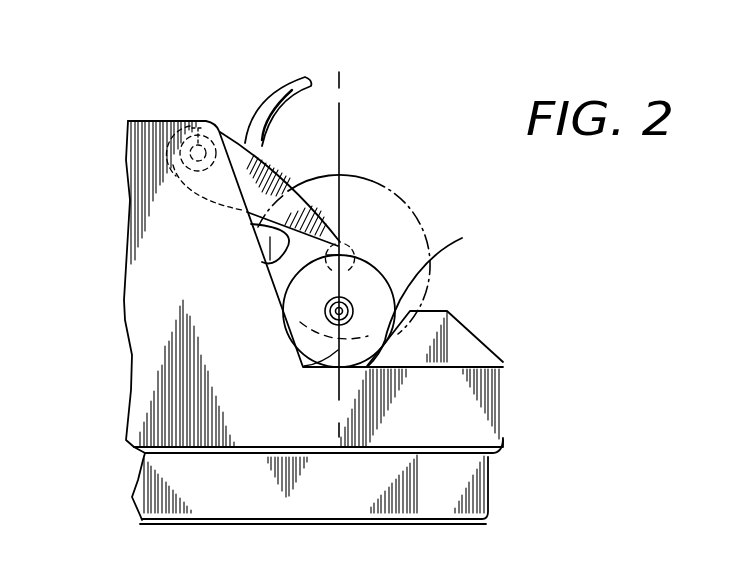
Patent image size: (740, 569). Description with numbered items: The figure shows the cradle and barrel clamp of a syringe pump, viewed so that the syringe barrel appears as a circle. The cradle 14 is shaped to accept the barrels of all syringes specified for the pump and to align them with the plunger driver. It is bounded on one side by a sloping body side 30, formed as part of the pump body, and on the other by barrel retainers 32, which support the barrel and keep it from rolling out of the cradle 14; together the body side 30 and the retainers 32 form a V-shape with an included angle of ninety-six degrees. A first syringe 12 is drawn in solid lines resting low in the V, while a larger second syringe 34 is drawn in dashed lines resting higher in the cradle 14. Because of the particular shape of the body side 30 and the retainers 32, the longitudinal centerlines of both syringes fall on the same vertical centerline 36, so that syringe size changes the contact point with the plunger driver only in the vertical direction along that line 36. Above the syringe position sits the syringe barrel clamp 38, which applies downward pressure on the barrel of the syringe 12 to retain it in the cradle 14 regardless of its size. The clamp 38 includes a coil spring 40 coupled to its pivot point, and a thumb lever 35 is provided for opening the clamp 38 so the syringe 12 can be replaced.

The syringe 12 is at (432, 297).
The cradle 14 is at (293, 335).
The sloping body side 30 is at (272, 259).
The barrel retainers 32 is at (463, 353).
The second syringe 34 is at (424, 211).
The thumb lever 35 is at (267, 95).
The vertical centerline 36 is at (342, 120).
The syringe barrel clamp 38 is at (297, 175).
The coil spring 40 is at (197, 120).